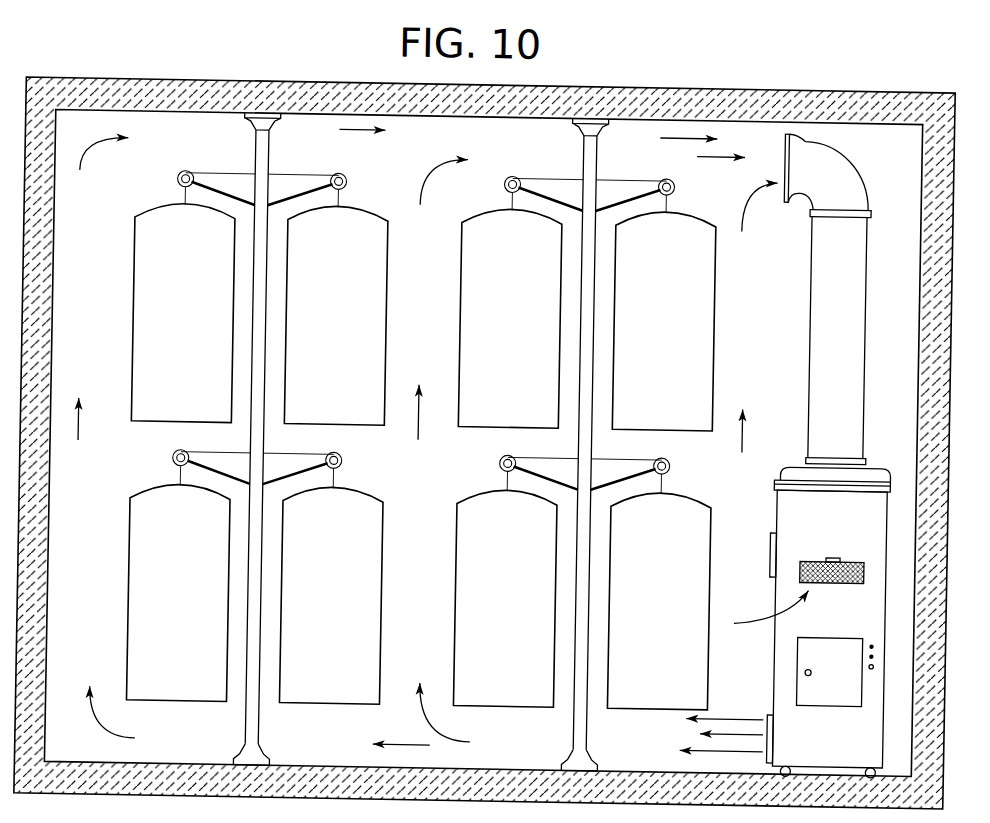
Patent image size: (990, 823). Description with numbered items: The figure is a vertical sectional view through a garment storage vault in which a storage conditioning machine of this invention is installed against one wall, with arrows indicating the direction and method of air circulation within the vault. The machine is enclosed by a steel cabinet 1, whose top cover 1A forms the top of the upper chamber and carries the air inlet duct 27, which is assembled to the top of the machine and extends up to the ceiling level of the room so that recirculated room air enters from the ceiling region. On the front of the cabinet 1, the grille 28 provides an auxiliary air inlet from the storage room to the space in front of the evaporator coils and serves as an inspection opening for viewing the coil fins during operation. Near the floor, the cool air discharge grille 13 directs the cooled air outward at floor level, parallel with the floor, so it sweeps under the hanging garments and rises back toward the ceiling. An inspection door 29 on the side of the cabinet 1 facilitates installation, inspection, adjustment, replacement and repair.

The steel cabinet 1 is at (787, 494).
The top cover 1A is at (868, 463).
The cool air discharge grille 13 is at (776, 710).
The air inlet duct 27 is at (845, 311).
The grille 28 is at (849, 553).
The inspection door 29 is at (833, 700).